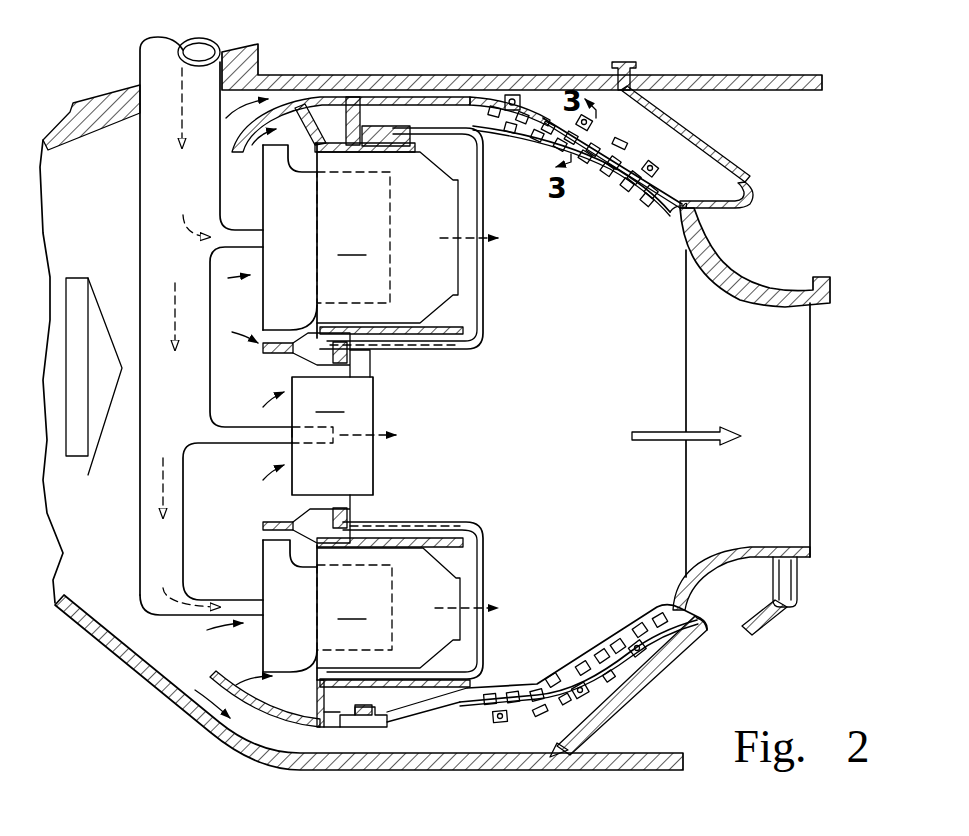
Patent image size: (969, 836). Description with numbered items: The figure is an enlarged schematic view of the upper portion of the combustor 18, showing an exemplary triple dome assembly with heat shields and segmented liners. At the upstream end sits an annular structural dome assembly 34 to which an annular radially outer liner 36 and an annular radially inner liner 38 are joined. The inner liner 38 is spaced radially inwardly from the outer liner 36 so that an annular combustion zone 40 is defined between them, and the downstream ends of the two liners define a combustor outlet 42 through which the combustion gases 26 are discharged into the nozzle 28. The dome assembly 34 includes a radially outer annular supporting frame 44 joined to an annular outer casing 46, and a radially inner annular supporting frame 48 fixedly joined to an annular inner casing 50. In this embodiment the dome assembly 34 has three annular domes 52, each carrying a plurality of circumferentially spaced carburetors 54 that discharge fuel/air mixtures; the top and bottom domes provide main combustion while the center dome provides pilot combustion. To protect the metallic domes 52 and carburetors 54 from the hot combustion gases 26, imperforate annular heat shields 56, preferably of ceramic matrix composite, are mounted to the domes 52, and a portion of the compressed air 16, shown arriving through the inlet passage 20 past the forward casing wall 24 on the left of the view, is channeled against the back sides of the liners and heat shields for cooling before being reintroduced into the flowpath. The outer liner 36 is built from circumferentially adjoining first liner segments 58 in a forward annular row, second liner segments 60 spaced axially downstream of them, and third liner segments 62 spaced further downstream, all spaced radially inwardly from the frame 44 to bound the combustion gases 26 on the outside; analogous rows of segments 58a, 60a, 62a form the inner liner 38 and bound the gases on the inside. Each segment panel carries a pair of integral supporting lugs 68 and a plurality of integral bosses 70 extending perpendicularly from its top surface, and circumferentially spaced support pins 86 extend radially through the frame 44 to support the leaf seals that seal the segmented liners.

The compressed air 16 is at (70, 278).
The combustor 18 is at (789, 203).
The air inlet duct 20 is at (182, 44).
The outer casing 24 is at (140, 184).
The combustion gases 26 is at (664, 441).
The nozzle 28 is at (748, 278).
The dome assembly 34 is at (329, 125).
The outer liner 36 is at (576, 421).
The inner liner 38 is at (458, 649).
The combustion zone 40 is at (574, 400).
The combustor outlet 42 is at (672, 350).
The outer supporting frame 44 is at (641, 101).
The outer casing 46 is at (604, 74).
The inner supporting frame 48 is at (600, 682).
The inner casing 50 is at (615, 754).
The domes 52 is at (280, 360).
The carburetors 54 is at (380, 411).
The heat shields 56 is at (443, 353).
The first liner segments 58 is at (503, 132).
The first liner segments of inner liner 58a is at (503, 690).
The second liner segments 60 is at (593, 157).
The second liner segments of inner liner 60a is at (555, 670).
The third liner segments 62 is at (665, 206).
The third liner segments of inner liner 62a is at (653, 618).
The supporting lugs 68 is at (709, 162).
The bosses 70 is at (665, 192).
The support pins 86 is at (628, 143).